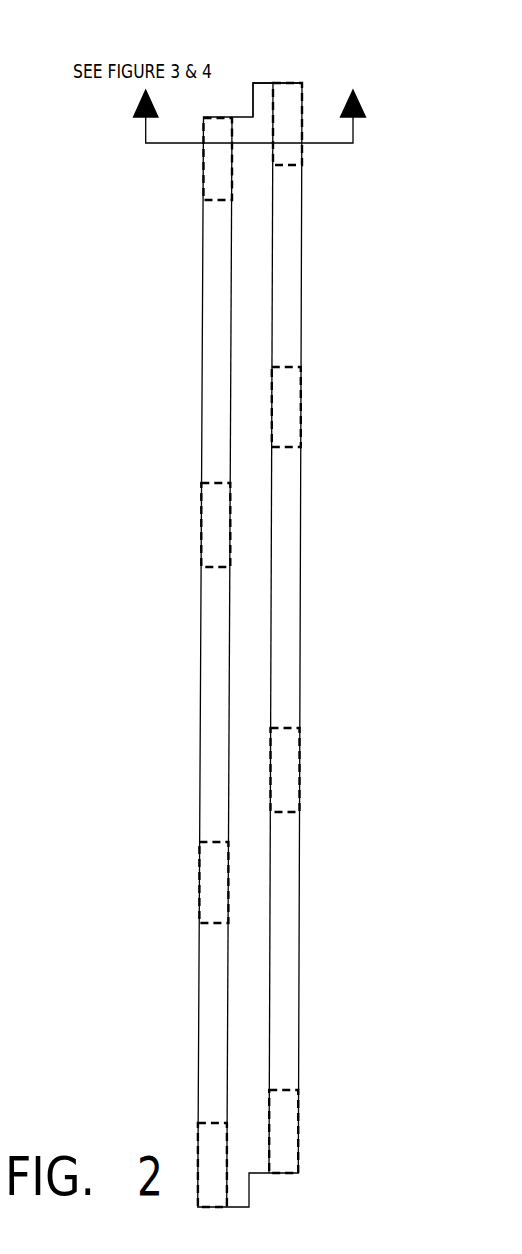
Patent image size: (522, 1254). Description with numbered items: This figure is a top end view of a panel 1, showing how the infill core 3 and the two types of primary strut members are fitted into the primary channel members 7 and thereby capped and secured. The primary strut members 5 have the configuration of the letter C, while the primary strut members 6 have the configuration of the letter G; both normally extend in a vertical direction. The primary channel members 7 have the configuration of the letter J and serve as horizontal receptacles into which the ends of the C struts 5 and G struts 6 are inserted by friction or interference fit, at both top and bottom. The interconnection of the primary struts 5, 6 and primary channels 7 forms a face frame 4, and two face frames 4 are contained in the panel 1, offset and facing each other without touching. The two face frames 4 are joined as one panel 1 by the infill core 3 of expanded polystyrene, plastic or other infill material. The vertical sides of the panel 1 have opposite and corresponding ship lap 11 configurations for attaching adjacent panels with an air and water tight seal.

The panel 1 is at (200, 688).
The infill core 3 is at (247, 610).
The face frame 4 is at (265, 645).
The primary channel member 7 is at (290, 271).
The primary strut member 5 is at (203, 159).
The primary strut member 6 is at (303, 157).
The ship lap 11 is at (265, 83).